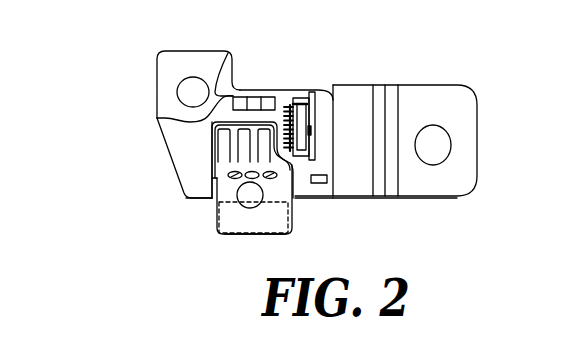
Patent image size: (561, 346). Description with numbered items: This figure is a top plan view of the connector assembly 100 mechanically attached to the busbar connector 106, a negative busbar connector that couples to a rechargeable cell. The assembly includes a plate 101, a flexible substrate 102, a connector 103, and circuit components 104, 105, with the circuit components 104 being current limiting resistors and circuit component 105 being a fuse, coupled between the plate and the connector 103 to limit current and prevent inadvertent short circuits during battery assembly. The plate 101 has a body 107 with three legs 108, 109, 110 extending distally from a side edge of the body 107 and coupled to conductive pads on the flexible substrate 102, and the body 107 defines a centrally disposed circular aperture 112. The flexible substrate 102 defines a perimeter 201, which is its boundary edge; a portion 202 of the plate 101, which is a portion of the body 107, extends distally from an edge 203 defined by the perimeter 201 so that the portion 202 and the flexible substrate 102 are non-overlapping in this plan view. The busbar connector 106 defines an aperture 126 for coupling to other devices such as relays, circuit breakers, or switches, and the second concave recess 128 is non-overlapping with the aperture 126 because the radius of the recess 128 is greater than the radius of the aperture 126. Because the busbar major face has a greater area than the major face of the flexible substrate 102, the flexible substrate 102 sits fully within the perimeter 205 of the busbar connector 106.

The connector assembly 100 is at (81, 92).
The flexible substrate 102 is at (178, 140).
The perimeter of the busbar connector 205 is at (180, 52).
The third aperture 126 is at (193, 77).
The second concave recess 128 is at (228, 58).
The perimeter 201 is at (162, 116).
The circuit components 104 is at (238, 96).
The connector 103 is at (304, 112).
The busbar connector 106 is at (445, 86).
The plate 101 is at (213, 218).
The leg 108 is at (228, 143).
The leg 109 is at (247, 152).
The leg 110 is at (265, 162).
The edge 203 is at (193, 198).
The body 107 is at (277, 215).
The portion of the plate 202 is at (235, 236).
The aperture 112 is at (302, 202).
The circuit component 105 is at (325, 183).